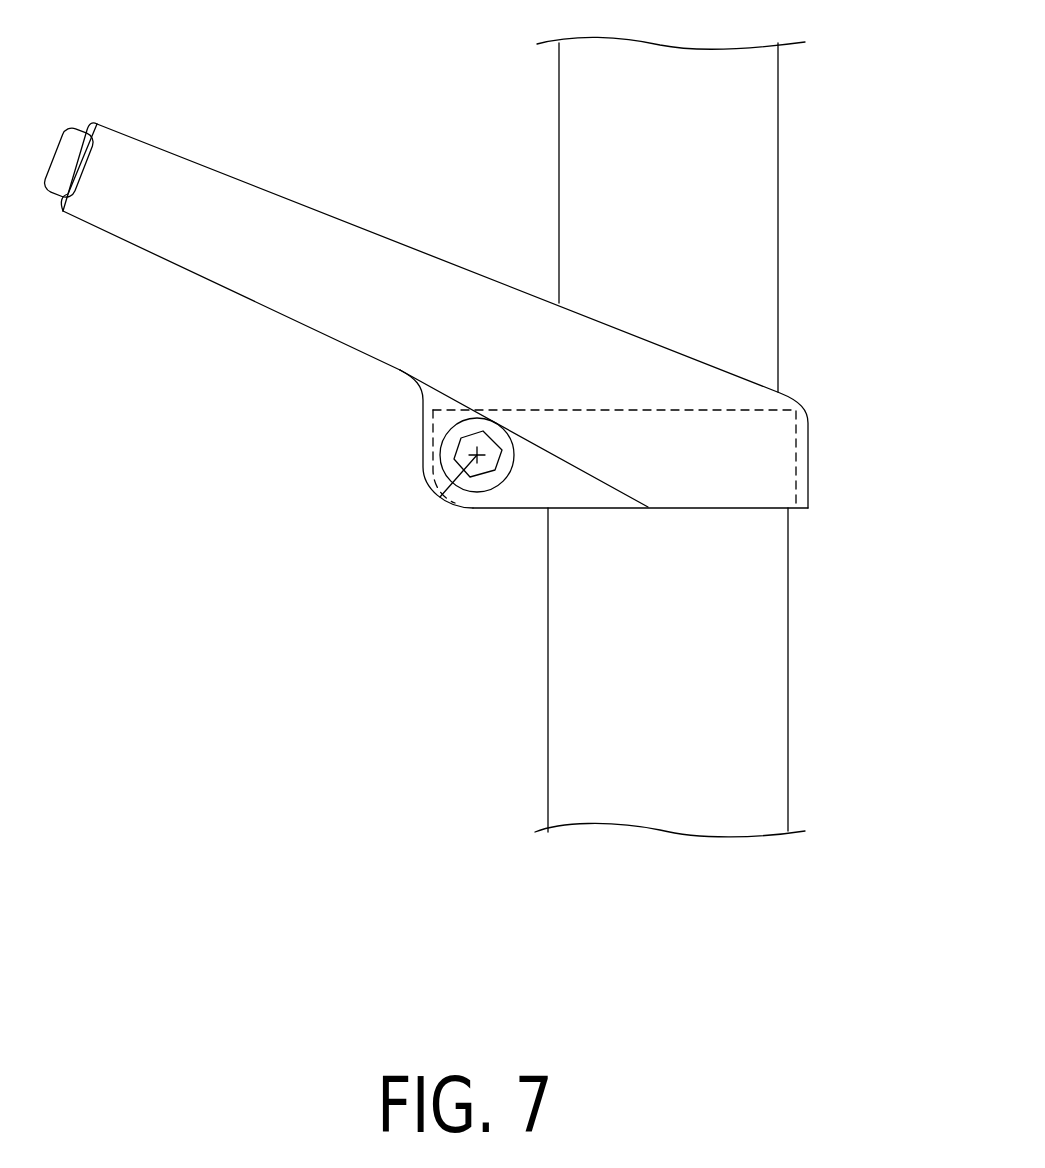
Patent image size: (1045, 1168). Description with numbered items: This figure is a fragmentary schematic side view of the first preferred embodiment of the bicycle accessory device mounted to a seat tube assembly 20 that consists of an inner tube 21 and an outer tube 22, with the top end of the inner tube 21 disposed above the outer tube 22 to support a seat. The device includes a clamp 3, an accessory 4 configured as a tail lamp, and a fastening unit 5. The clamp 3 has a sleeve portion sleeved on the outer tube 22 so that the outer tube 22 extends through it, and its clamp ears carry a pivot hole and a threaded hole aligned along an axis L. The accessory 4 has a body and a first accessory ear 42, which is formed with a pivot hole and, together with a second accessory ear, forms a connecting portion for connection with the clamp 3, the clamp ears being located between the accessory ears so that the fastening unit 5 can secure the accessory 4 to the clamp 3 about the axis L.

The clamp 3 is at (815, 455).
The accessory 4 is at (425, 254).
The fastening unit 5 is at (489, 508).
The seat tube assembly 20 is at (728, 437).
The inner tube 21 is at (768, 144).
The outer tube 22 is at (771, 687).
The first accessory ear 42 is at (440, 432).
The axis L is at (440, 497).